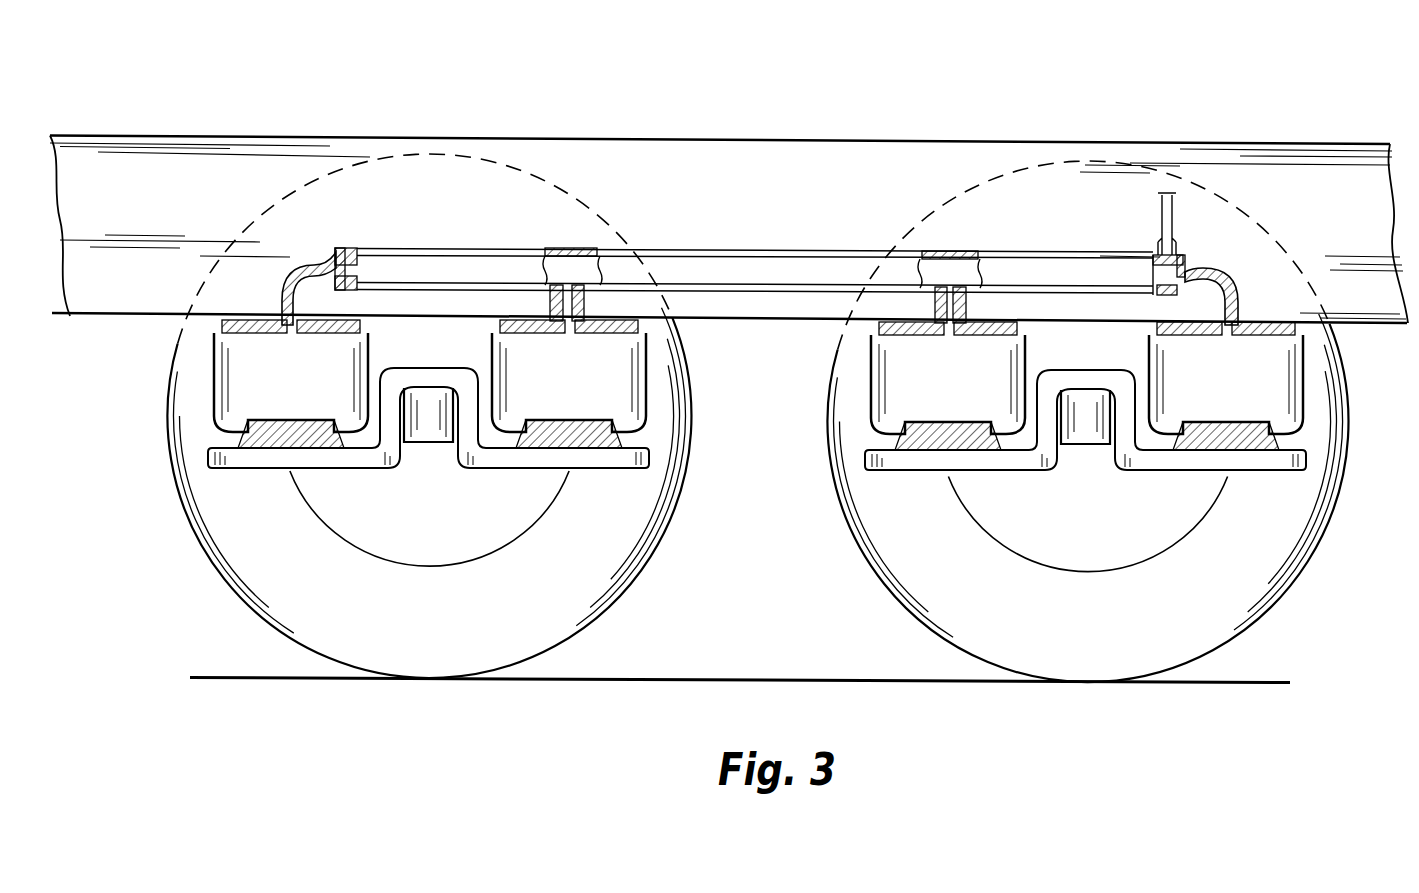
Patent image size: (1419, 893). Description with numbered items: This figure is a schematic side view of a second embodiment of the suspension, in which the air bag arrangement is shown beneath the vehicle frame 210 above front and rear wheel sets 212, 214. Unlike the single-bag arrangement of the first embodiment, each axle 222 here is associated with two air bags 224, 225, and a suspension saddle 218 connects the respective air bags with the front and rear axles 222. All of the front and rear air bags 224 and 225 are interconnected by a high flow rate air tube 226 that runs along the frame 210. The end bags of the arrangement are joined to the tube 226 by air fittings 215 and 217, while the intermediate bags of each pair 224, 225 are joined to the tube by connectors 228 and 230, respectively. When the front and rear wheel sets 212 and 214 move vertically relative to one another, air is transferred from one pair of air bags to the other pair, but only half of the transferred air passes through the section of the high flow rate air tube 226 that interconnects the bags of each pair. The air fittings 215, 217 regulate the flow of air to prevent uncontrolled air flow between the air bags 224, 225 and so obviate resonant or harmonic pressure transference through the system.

The vehicle frame 210 is at (326, 138).
The front wheel set 212 is at (442, 634).
The rear wheel set 214 is at (1102, 645).
The air fitting 215 is at (306, 258).
The air fitting 217 is at (1220, 267).
The suspension saddle 218 is at (908, 470).
The axle 222 is at (1090, 445).
The air bag 224 is at (306, 397).
The air bag 225 is at (963, 400).
The high flow rate air tube 226 is at (697, 262).
The connector 228 is at (598, 300).
The connector 230 is at (975, 316).